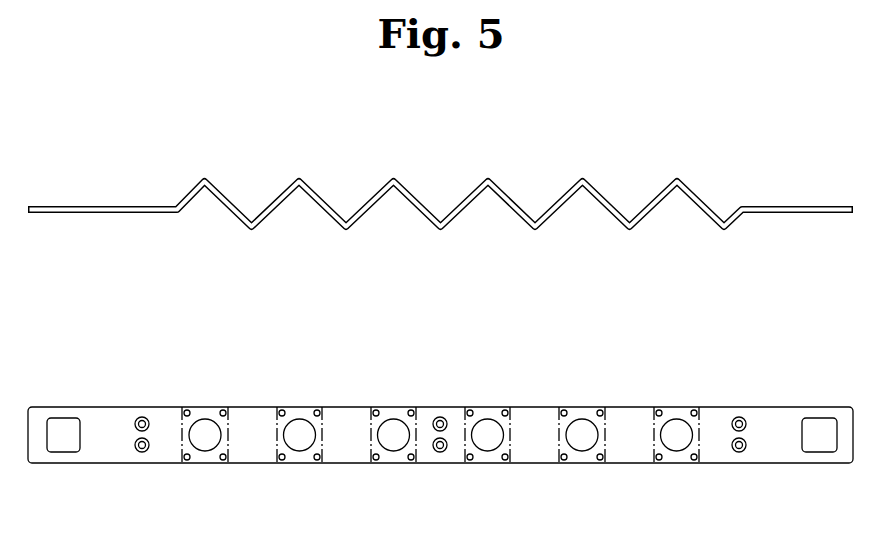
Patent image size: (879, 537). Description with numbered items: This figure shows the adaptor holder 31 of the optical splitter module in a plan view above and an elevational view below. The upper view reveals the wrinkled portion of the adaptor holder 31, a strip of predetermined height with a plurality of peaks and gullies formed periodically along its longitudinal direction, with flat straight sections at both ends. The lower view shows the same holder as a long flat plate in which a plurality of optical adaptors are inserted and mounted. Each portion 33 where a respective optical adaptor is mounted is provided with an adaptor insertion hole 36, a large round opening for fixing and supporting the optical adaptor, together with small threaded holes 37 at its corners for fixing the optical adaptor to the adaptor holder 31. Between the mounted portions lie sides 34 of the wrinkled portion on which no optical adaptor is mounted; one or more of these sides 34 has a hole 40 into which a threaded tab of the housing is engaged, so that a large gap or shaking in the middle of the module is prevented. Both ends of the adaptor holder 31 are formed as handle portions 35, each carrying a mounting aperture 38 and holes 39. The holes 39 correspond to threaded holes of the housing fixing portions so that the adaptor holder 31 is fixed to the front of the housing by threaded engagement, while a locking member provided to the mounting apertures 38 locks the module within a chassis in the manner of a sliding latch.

The adaptor holder 31 is at (712, 404).
The portion where optical adaptors are mounted 33 is at (304, 464).
The side 34 is at (349, 464).
The handle portion 35 is at (100, 464).
The adaptor insertion hole 36 is at (299, 426).
The threaded hole 37 is at (279, 464).
The mounting aperture 38 is at (61, 417).
The hole 39 is at (142, 416).
The hole 40 is at (440, 416).